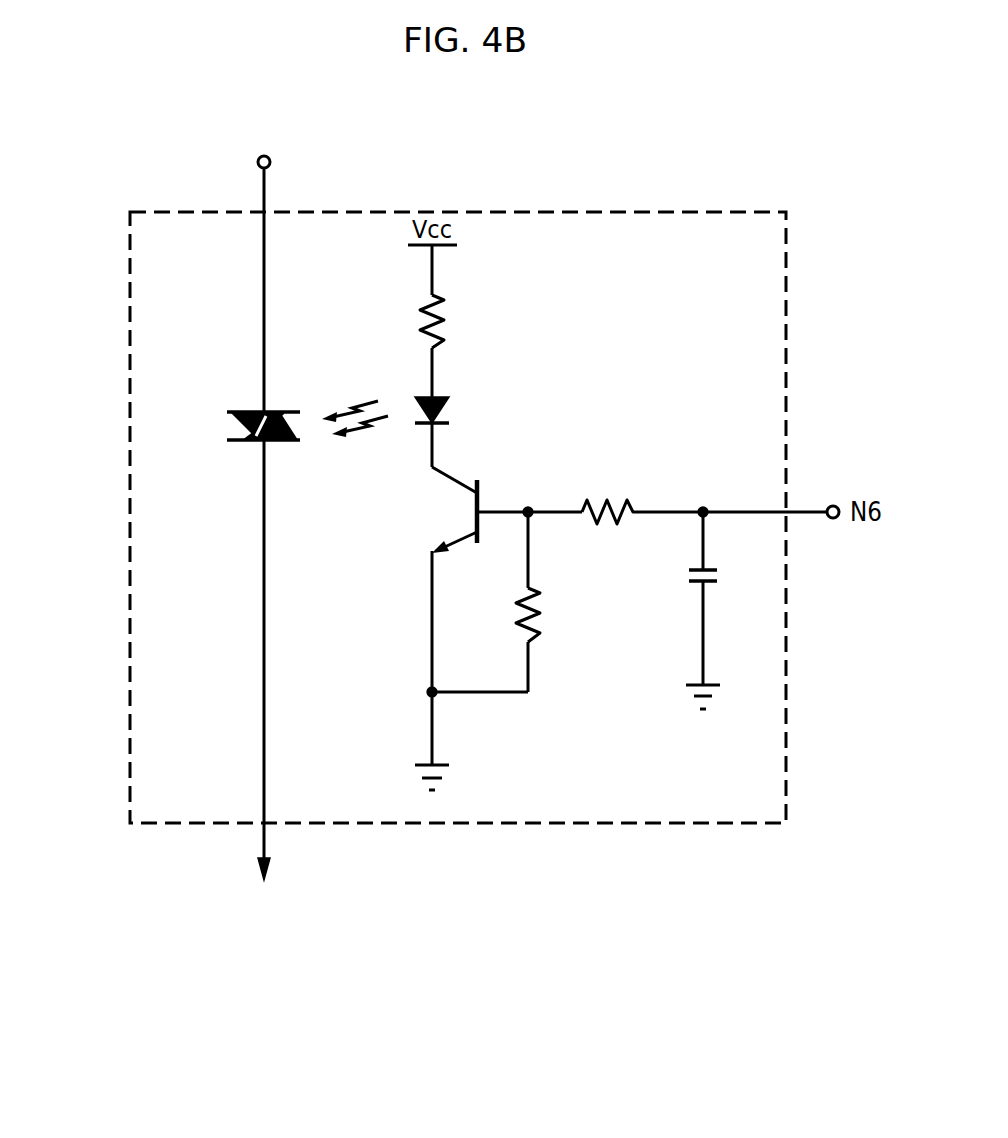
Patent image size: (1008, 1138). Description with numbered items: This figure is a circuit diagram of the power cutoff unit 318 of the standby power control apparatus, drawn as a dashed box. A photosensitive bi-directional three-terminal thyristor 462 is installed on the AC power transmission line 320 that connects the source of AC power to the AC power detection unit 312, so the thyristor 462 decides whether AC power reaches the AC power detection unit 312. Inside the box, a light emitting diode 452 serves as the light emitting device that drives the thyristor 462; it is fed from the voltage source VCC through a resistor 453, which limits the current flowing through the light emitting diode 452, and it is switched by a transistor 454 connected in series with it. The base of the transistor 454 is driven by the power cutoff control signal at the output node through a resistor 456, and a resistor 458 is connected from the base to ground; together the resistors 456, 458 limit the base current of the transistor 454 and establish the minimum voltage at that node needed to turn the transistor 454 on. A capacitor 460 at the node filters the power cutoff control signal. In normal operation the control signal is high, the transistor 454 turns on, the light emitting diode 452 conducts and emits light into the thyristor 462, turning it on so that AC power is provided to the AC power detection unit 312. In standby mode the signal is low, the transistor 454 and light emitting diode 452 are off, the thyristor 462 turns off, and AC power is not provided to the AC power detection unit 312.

The AC power detection unit 312 is at (272, 933).
The power cutoff unit 318 is at (786, 383).
The AC power transmission line 320 is at (264, 288).
The light emitting diode 452 is at (456, 408).
The resistor 453 is at (458, 321).
The transistor 454 is at (459, 579).
The resistor 456 is at (610, 493).
The resistor 458 is at (512, 602).
The capacitor 460 is at (728, 598).
The photosensitive bi-directional three-terminal thyristor 462 is at (282, 420).